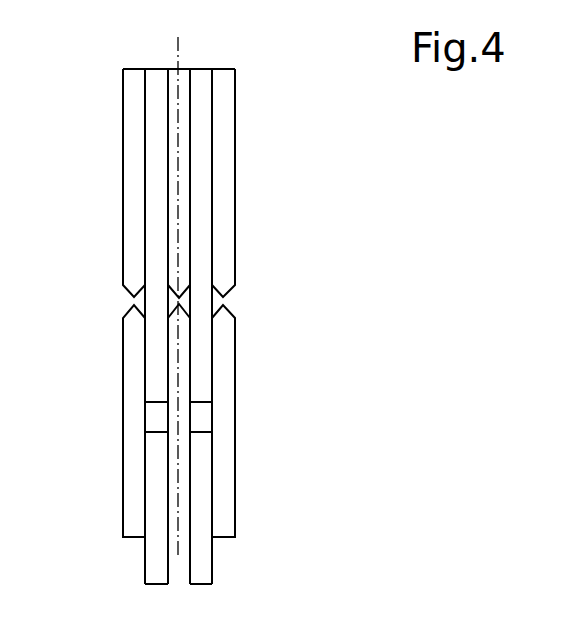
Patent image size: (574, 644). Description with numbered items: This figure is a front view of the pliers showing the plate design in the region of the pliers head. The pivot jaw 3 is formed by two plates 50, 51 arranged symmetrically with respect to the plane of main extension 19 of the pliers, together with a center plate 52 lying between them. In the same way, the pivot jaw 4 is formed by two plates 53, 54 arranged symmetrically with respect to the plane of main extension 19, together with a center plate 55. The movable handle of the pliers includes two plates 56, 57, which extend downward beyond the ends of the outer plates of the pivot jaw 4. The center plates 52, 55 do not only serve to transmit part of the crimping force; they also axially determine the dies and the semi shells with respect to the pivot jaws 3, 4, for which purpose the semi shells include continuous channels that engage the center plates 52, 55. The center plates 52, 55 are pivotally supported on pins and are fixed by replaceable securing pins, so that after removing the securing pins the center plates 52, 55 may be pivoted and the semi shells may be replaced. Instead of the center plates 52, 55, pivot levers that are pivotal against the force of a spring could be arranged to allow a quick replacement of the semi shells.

The plane of main extension 19 is at (178, 53).
The plate 50 is at (133, 117).
The plate 51 is at (222, 156).
The center plate 52 is at (181, 116).
The pivot jaw 3 is at (250, 203).
The plate 53 is at (135, 360).
The plate 54 is at (224, 358).
The pivot jaw 4 is at (257, 393).
The center plate 55 is at (174, 447).
The plate 56 is at (156, 572).
The plate 57 is at (203, 562).